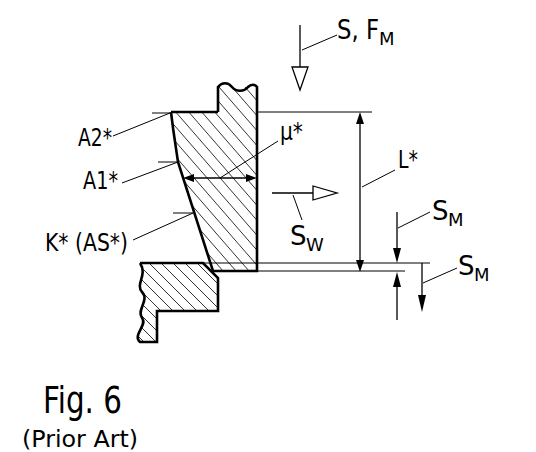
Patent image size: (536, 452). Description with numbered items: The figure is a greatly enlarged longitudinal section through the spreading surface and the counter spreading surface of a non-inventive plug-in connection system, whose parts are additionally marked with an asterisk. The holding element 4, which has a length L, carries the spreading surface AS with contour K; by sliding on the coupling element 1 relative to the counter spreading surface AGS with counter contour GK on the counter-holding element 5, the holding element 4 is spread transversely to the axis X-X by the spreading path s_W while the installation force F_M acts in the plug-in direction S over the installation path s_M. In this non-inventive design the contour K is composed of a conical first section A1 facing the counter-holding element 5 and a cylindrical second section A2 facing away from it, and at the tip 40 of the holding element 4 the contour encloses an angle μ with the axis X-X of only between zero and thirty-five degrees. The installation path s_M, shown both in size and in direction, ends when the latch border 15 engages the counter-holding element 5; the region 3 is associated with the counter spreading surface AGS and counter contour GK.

The coupling element 1 is at (151, 296).
The holding element region 3 is at (243, 268).
The holding element 4 is at (228, 69).
The tip of the holding element 40 is at (226, 91).
The counter-holding element 5 is at (190, 297).
The latch border 15 is at (195, 112).